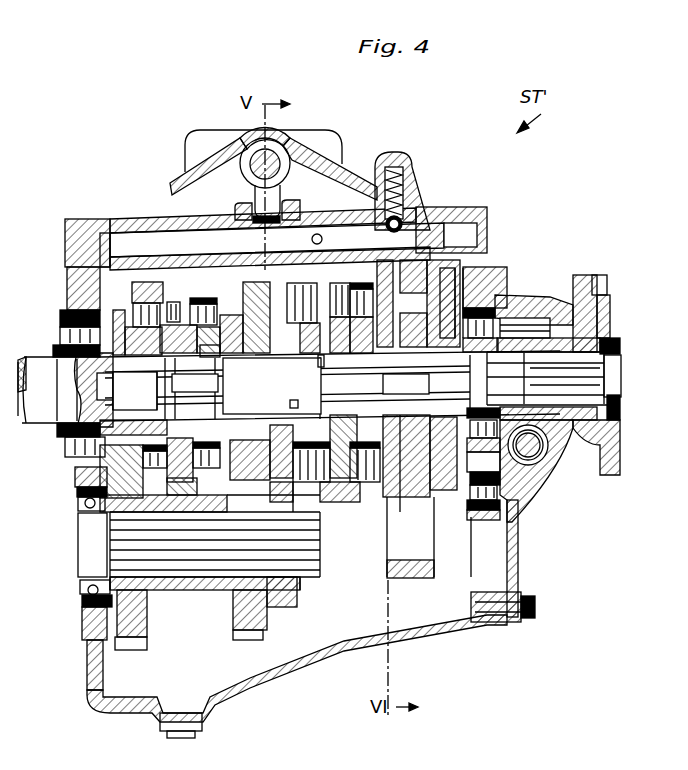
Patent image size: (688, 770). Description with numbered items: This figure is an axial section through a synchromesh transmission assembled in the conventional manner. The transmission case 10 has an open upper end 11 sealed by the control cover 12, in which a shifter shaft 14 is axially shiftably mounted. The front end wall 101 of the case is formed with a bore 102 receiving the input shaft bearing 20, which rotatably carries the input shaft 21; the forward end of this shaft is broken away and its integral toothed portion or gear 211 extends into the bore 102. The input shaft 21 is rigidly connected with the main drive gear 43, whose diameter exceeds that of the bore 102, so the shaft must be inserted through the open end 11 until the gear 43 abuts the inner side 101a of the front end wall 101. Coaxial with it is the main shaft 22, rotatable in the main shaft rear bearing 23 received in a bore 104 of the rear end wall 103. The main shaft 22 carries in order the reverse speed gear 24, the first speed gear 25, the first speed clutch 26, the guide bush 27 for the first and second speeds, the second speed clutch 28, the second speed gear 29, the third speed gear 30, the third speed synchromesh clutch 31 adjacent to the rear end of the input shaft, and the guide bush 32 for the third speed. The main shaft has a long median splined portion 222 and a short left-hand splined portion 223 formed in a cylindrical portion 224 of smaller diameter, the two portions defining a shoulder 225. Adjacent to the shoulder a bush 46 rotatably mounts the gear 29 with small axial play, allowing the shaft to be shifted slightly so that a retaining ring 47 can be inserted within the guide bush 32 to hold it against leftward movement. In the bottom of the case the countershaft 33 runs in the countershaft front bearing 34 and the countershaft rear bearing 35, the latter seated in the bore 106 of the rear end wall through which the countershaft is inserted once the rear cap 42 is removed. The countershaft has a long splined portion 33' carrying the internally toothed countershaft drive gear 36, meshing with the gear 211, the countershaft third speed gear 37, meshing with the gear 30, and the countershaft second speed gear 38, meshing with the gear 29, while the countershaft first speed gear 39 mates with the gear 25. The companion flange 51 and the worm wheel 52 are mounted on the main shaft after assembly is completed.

The transmission case 10 is at (431, 633).
The open upper end 11 is at (67, 262).
The control cover 12 is at (406, 192).
The shifter shaft 14 is at (422, 237).
The input shaft bearing 20 is at (72, 463).
The input shaft 21 is at (38, 420).
The main shaft 22 is at (611, 373).
The main shaft rear bearing 23 is at (500, 308).
The reverse speed gear 24 is at (451, 230).
The first speed gear 25 is at (418, 303).
The first speed clutch 26 is at (370, 300).
The guide bush for the first and second speeds 27 is at (336, 389).
The second speed clutch 28 is at (292, 296).
The second speed gear 29 is at (262, 305).
The third speed gear 30 is at (238, 325).
The third speed synchromesh clutch 31 is at (214, 320).
The guide bush for the third speed 32 is at (208, 357).
The countershaft 33 is at (278, 430).
The long splined portion 33' is at (205, 607).
The countershaft front bearing 34 is at (80, 580).
The countershaft rear bearing 35 is at (517, 560).
The countershaft drive gear 36 is at (133, 630).
The countershaft third speed gear 37 is at (250, 612).
The countershaft second speed gear 38 is at (283, 600).
The countershaft first speed gear 39 is at (418, 578).
The rear cap 42 is at (527, 308).
The main drive gear 43 is at (140, 322).
The bush 46 is at (322, 366).
The retaining ring 47 is at (135, 391).
The companion flange 51 is at (607, 440).
The worm wheel 52 is at (550, 322).
The front end wall 101 is at (80, 478).
The inner side of the front end wall 101a is at (100, 282).
The bore 102 is at (70, 312).
The rear end wall 103 is at (517, 488).
The bore 104 is at (472, 305).
The bore 106 is at (487, 593).
The integral toothed portion 211 is at (122, 345).
The median splined portion 222 is at (420, 394).
The left-hand splined portion 223 is at (210, 392).
The cylindrical portion 224 is at (270, 417).
The shoulder 225 is at (292, 396).